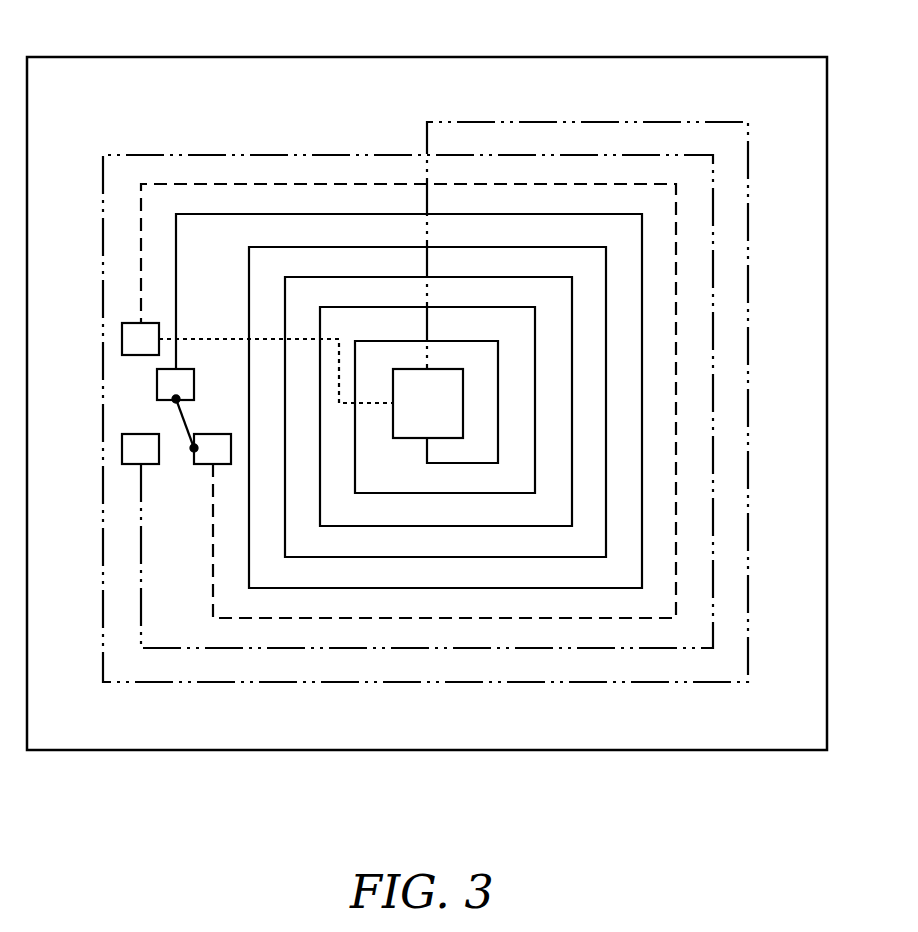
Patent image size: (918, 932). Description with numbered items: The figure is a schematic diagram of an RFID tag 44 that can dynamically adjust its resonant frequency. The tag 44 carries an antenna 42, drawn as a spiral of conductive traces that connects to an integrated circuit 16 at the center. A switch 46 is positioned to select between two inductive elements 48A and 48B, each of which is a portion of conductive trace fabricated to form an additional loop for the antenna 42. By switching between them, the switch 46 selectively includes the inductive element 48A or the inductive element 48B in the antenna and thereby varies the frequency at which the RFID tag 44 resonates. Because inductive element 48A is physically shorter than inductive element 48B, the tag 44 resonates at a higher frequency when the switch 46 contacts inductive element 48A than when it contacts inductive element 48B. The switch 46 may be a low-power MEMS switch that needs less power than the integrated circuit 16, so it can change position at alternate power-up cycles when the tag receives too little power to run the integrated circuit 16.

The integrated circuit 16 is at (446, 427).
The antenna 42 is at (656, 389).
The RFID tag 44 is at (510, 57).
The switch 46 is at (128, 398).
The inductive element 48A is at (411, 617).
The inductive element 48B is at (197, 683).